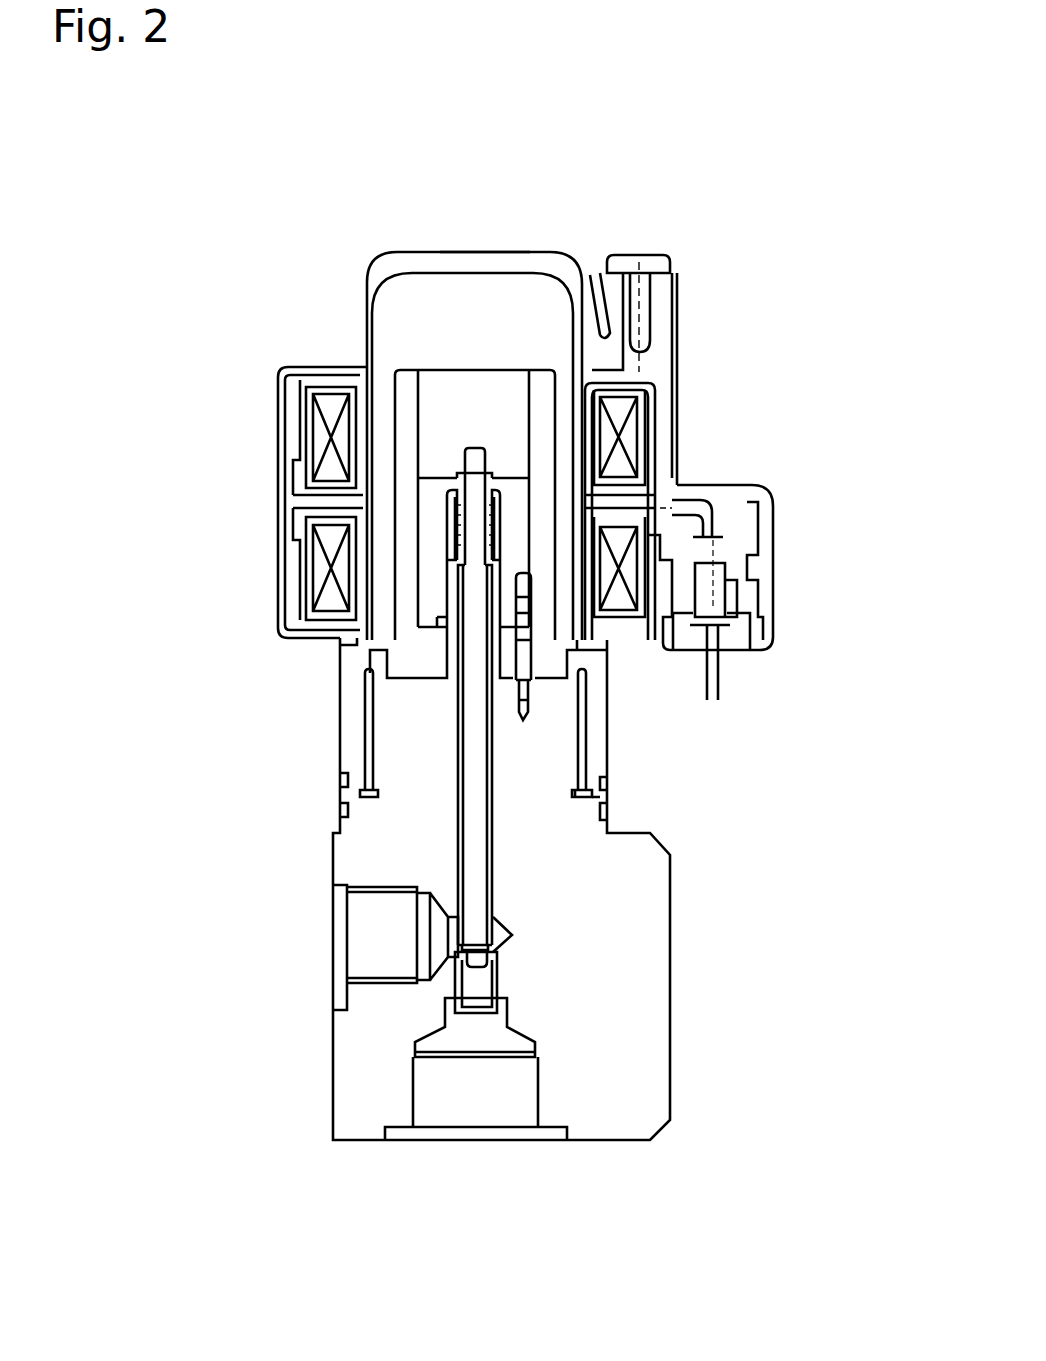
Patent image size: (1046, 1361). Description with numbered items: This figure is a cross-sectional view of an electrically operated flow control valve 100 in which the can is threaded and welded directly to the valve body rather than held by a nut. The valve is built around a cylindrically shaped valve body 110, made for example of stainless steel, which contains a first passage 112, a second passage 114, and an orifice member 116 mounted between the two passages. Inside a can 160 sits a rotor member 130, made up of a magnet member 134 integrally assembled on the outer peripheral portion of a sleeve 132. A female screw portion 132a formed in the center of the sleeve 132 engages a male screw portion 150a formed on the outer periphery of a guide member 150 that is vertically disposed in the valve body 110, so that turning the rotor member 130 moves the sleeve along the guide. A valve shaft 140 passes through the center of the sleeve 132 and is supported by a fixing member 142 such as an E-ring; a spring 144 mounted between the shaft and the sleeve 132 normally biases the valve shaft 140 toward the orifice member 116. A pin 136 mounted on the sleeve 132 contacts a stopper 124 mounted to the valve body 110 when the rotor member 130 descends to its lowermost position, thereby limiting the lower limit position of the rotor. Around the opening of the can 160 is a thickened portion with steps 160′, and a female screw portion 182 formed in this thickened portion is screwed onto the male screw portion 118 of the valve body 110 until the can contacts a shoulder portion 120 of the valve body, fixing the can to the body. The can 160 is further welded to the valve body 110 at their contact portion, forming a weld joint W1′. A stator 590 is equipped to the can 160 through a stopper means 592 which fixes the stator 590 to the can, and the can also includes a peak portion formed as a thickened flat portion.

The electrically operated flow control valve 100 is at (722, 442).
The valve body 110 is at (650, 992).
The first passage 112 is at (370, 932).
The second passage 114 is at (468, 1118).
The orifice member 116 is at (447, 1002).
The male screw portion 118 is at (370, 740).
The shoulder portion 120 is at (590, 797).
The stopper 124 is at (560, 695).
The rotor member 130 is at (422, 340).
The sleeve 132 is at (400, 470).
The female screw portion 132a is at (443, 600).
The magnet member 134 is at (385, 430).
The pin 136 is at (523, 572).
The valve shaft 140 is at (470, 843).
The fixing member 142 is at (457, 535).
The spring 144 is at (453, 533).
The guide member 150 is at (458, 655).
The male screw portion 150a is at (450, 573).
The can 160 is at (378, 272).
The thickened portion with steps 160′ is at (597, 757).
The female screw portion 182 is at (588, 727).
The stator 590 is at (287, 470).
The stopper means 592 is at (688, 282).
The weld joint W1′ is at (342, 797).